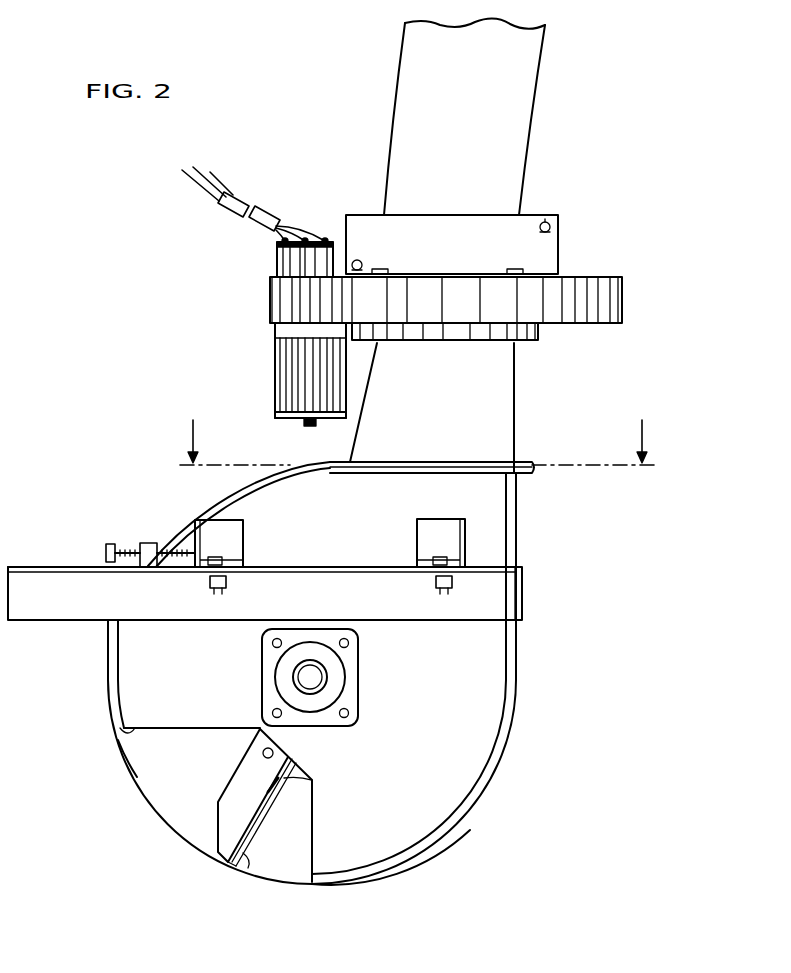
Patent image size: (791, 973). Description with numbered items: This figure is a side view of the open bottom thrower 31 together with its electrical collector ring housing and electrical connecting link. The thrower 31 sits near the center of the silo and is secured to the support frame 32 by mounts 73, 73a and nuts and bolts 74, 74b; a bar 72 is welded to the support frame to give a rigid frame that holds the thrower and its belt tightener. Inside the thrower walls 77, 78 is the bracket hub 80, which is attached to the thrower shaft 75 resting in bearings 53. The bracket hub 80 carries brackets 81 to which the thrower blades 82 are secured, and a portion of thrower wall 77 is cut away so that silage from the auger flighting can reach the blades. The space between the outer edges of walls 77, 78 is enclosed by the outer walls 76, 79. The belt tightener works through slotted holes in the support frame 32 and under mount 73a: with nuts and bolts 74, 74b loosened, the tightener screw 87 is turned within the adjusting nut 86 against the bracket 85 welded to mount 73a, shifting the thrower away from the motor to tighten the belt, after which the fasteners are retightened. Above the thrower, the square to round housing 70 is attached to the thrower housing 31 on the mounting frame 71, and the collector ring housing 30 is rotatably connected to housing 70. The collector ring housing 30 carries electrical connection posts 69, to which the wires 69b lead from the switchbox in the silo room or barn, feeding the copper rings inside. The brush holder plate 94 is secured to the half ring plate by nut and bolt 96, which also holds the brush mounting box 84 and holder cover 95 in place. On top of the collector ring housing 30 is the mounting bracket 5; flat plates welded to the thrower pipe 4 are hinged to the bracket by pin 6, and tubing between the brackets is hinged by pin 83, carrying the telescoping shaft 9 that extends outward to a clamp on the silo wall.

The thrower pipe 4 is at (384, 170).
The mounting bracket 5 is at (558, 245).
The pin 6 is at (352, 262).
The telescoping shaft 9 is at (417, 431).
The collector ring housing 30 is at (622, 290).
The thrower 31 is at (483, 712).
The support frame 32 is at (92, 567).
The bearings 53 is at (358, 672).
The electrical connection posts 69 is at (277, 256).
The wires 69b is at (196, 194).
The square to round housing 70 is at (514, 440).
The mounting frame 71 is at (535, 472).
The bar 72 is at (522, 578).
The mount 73 is at (441, 519).
The mount 73a is at (243, 530).
The nuts and bolts 74 is at (444, 588).
The nuts and bolts 74b is at (226, 584).
The thrower shaft 75 is at (293, 677).
The outer wall 76 is at (108, 705).
The thrower wall 77 is at (120, 740).
The thrower wall 78 is at (137, 777).
The outer wall 79 is at (432, 850).
The bracket hub 80 is at (240, 735).
The bracket 81 is at (218, 820).
The thrower blade 82 is at (246, 866).
The pin 83 is at (558, 217).
The brush mounting box 84 is at (275, 390).
The bracket 85 is at (175, 510).
The adjusting nut 86 is at (148, 543).
The tightener screw 87 is at (110, 544).
The brush holder plate 94 is at (275, 328).
The holder cover 95 is at (280, 420).
The nut and bolt 96 is at (310, 426).